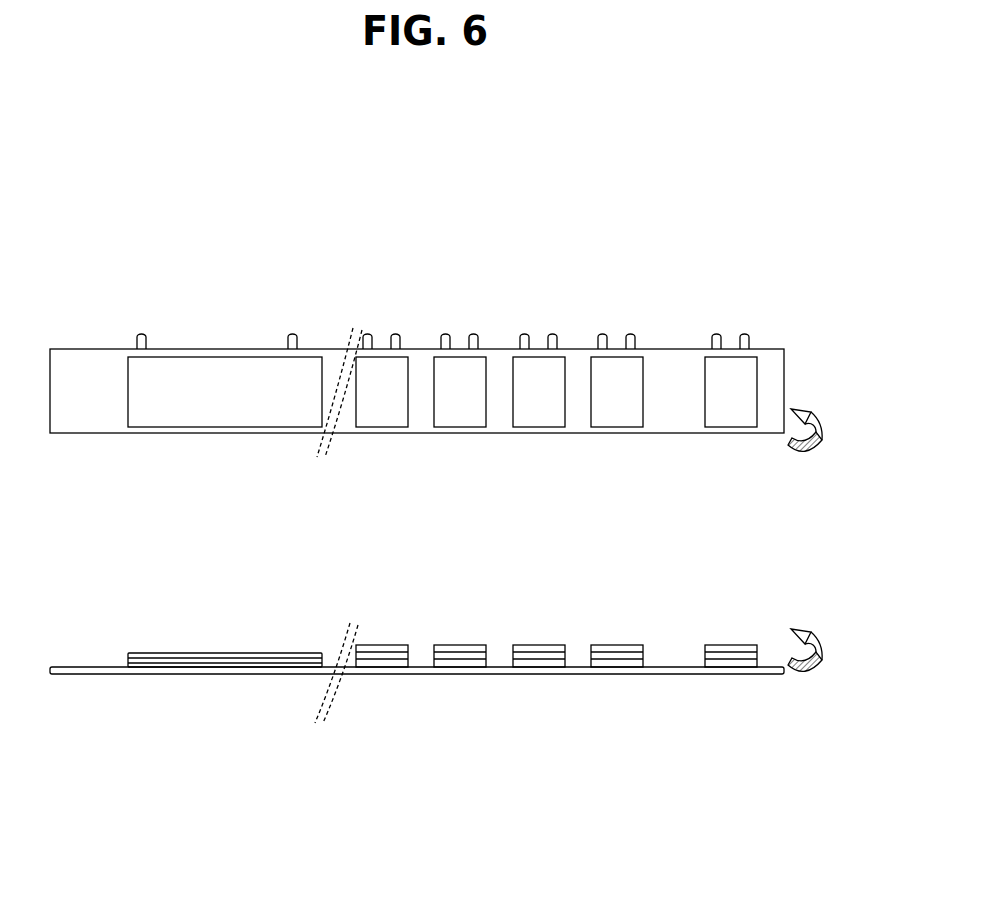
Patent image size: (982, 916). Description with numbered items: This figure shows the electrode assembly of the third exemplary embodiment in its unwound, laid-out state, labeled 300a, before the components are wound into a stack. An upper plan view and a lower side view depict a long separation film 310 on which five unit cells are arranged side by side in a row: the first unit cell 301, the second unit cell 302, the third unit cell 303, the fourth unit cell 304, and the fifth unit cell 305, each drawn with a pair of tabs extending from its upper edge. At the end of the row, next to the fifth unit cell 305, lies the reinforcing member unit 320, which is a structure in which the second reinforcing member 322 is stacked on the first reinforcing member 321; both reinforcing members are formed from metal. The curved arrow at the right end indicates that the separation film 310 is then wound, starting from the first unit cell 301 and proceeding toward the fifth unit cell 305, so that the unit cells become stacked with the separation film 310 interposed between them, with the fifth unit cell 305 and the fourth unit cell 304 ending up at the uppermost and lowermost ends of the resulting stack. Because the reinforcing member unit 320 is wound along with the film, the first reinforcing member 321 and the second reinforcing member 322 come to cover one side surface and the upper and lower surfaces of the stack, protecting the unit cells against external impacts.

The battery module 300a is at (92, 281).
The separation film 310 is at (663, 360).
The reinforcing member unit 320 is at (237, 413).
The first reinforcing member 321 is at (116, 672).
The second reinforcing member 322 is at (127, 655).
The first unit cell 301 is at (733, 417).
The second unit cell 302 is at (619, 418).
The third unit cell 303 is at (541, 418).
The fourth unit cell 304 is at (464, 418).
The fifth unit cell 305 is at (377, 418).